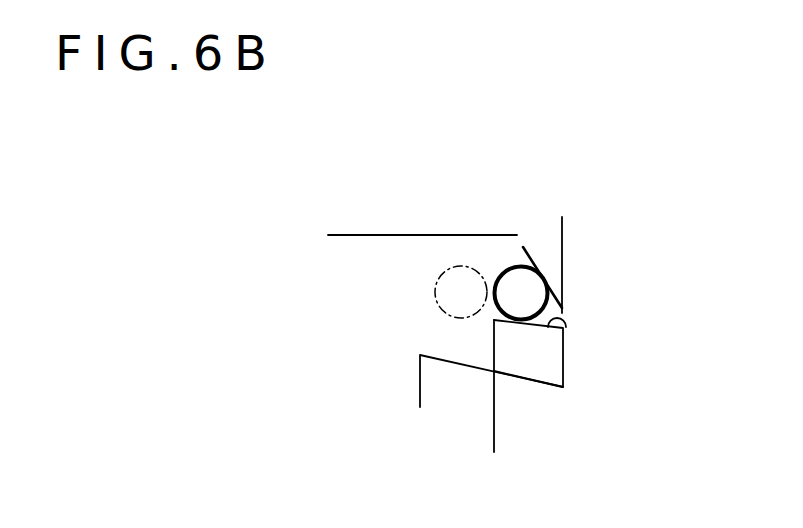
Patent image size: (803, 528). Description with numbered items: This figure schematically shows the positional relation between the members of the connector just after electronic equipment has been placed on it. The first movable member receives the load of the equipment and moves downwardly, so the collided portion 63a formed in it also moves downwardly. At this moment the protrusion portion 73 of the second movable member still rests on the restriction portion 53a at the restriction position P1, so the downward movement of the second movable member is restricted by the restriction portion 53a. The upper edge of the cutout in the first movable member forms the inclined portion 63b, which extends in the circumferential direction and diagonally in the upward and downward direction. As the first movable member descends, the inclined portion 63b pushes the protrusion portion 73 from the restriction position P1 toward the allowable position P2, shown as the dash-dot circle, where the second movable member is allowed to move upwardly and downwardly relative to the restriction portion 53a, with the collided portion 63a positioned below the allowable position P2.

The protrusion portion 73 is at (507, 265).
The inclined portion 63b is at (527, 254).
The collided portion 63a is at (438, 358).
The restriction portion 53a is at (566, 324).
The restriction position P1 is at (565, 312).
The allowable position P2 is at (435, 295).